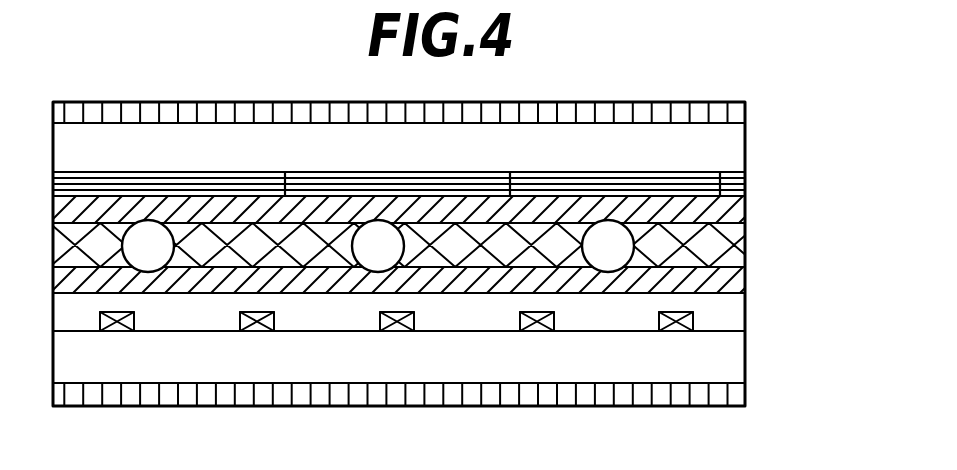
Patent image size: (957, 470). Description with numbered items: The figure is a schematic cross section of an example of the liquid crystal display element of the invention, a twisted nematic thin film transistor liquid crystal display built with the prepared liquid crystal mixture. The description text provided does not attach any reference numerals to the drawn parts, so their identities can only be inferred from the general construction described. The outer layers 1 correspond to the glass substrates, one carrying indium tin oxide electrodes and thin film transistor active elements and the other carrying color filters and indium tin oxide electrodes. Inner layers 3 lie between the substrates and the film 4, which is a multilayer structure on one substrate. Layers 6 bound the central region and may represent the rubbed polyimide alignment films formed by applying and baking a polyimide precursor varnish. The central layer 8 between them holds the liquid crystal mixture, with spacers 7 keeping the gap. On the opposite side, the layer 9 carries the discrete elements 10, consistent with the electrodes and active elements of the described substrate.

The substrate 1 is at (732, 111).
The transparent layer 3 is at (720, 158).
The multilayer film 4 is at (720, 185).
The alignment layer 6 is at (737, 205).
The spacer 7 is at (635, 243).
The liquid crystal layer 8 is at (737, 262).
The electrode layer 9 is at (732, 325).
The electrode 10 is at (542, 331).